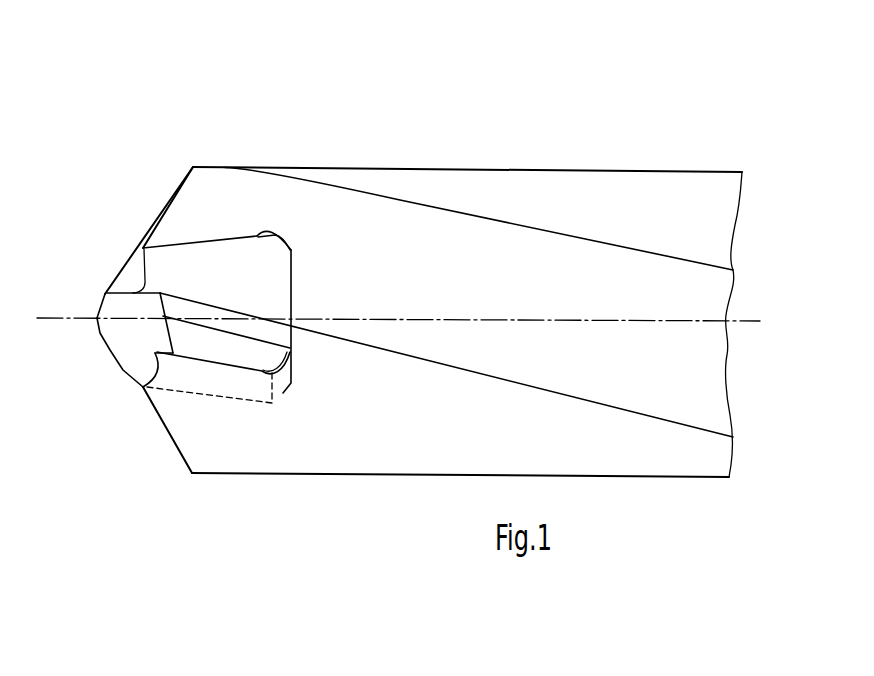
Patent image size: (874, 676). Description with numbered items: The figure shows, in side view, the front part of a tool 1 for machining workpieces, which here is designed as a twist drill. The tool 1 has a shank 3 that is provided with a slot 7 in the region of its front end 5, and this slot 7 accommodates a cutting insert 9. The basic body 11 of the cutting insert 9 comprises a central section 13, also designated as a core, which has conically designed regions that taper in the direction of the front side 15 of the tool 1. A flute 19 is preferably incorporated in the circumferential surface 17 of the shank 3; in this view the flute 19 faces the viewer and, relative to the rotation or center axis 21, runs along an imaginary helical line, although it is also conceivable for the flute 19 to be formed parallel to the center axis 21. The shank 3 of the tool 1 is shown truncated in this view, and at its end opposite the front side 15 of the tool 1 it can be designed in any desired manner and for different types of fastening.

The tool 1 is at (578, 137).
The shank 3 is at (722, 202).
The front end 5 is at (170, 232).
The slot 7 is at (240, 232).
The cutting insert 9 is at (113, 360).
The basic body 11 is at (262, 348).
The central section 13 is at (187, 260).
The front side 15 is at (97, 318).
The circumferential surface 17 is at (693, 168).
The flute 19 is at (634, 378).
The center axis 21 is at (688, 321).